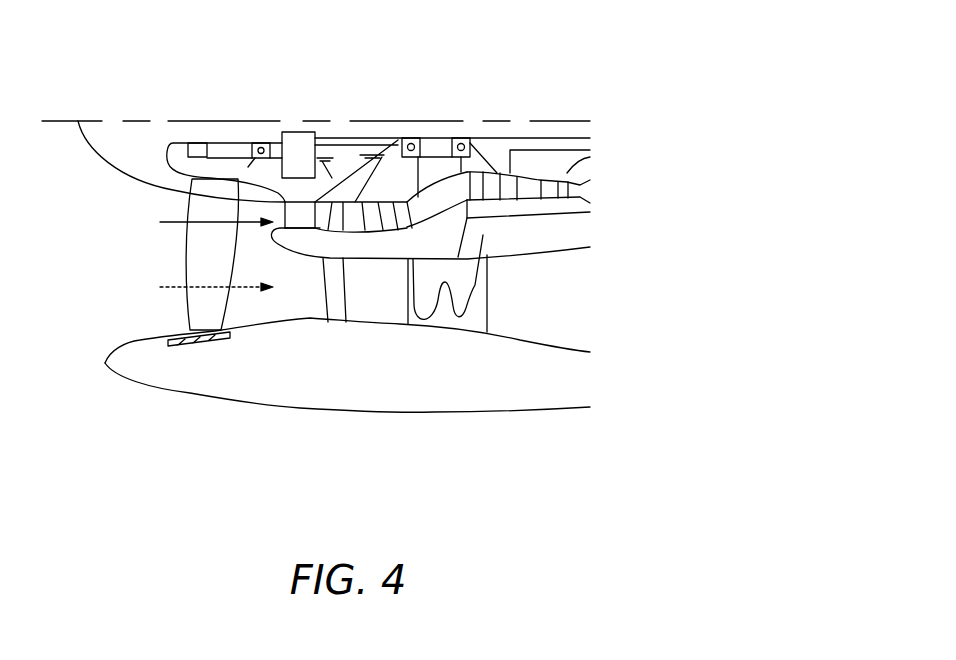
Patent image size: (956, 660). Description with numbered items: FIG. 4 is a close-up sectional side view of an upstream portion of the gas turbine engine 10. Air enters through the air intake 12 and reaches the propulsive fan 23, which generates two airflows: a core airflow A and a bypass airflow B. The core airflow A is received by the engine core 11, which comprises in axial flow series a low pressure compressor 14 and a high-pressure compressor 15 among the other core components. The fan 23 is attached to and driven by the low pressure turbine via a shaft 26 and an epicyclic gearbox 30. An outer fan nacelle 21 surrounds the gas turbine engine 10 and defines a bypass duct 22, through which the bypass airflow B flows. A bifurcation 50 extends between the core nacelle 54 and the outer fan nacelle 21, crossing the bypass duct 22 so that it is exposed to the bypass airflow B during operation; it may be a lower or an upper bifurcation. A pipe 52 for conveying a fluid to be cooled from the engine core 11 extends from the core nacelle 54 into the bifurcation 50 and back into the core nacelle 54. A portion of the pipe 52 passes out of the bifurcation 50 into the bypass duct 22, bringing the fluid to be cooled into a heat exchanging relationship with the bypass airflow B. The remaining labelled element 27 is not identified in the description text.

The gas turbine engine 10 is at (190, 393).
The core 11 is at (551, 223).
The air intake 12 is at (130, 317).
The low pressure compressor 14 is at (373, 227).
The high-pressure compressor 15 is at (528, 188).
The outer fan nacelle 21 is at (411, 398).
The bypass duct 22 is at (548, 310).
The propulsive fan 23 is at (193, 262).
The shaft 26 is at (523, 137).
The outer casing 27 is at (568, 150).
The epicyclic gearbox 30 is at (293, 143).
The bifurcation 50 is at (447, 318).
The pipe 52 is at (500, 280).
The core nacelle 54 is at (498, 258).
The core airflow A is at (208, 233).
The bypass airflow B is at (205, 291).